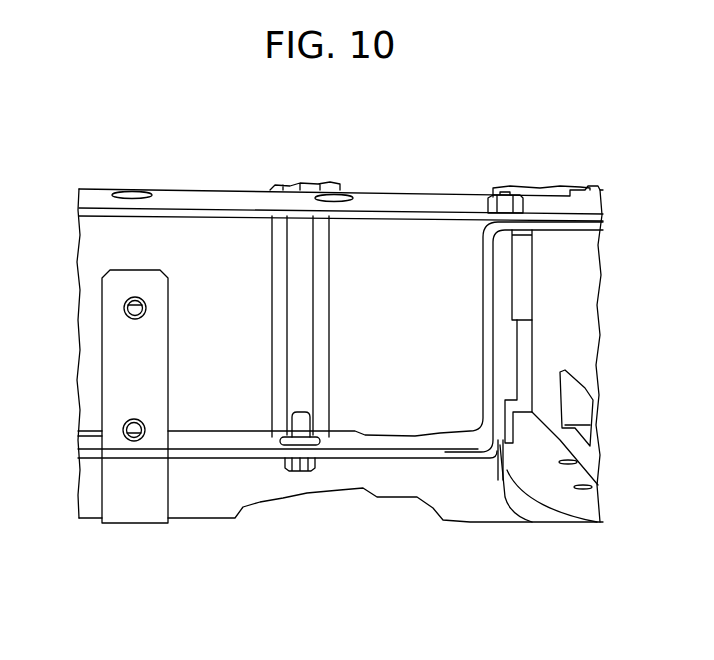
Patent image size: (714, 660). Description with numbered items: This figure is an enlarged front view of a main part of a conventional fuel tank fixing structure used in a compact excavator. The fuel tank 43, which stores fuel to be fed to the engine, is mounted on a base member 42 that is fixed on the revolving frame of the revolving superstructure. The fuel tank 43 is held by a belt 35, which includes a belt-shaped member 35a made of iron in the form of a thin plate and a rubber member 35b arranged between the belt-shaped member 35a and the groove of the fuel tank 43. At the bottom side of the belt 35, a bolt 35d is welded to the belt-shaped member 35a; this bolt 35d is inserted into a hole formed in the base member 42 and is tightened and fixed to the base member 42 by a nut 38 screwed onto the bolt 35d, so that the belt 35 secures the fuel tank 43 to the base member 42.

The belt 35 is at (292, 357).
The belt-shaped member 35a is at (300, 237).
The rubber member 35b is at (272, 275).
The bolt 35d is at (300, 423).
The nut 38 is at (308, 470).
The base member 42 is at (395, 455).
The fuel tank 43 is at (188, 373).